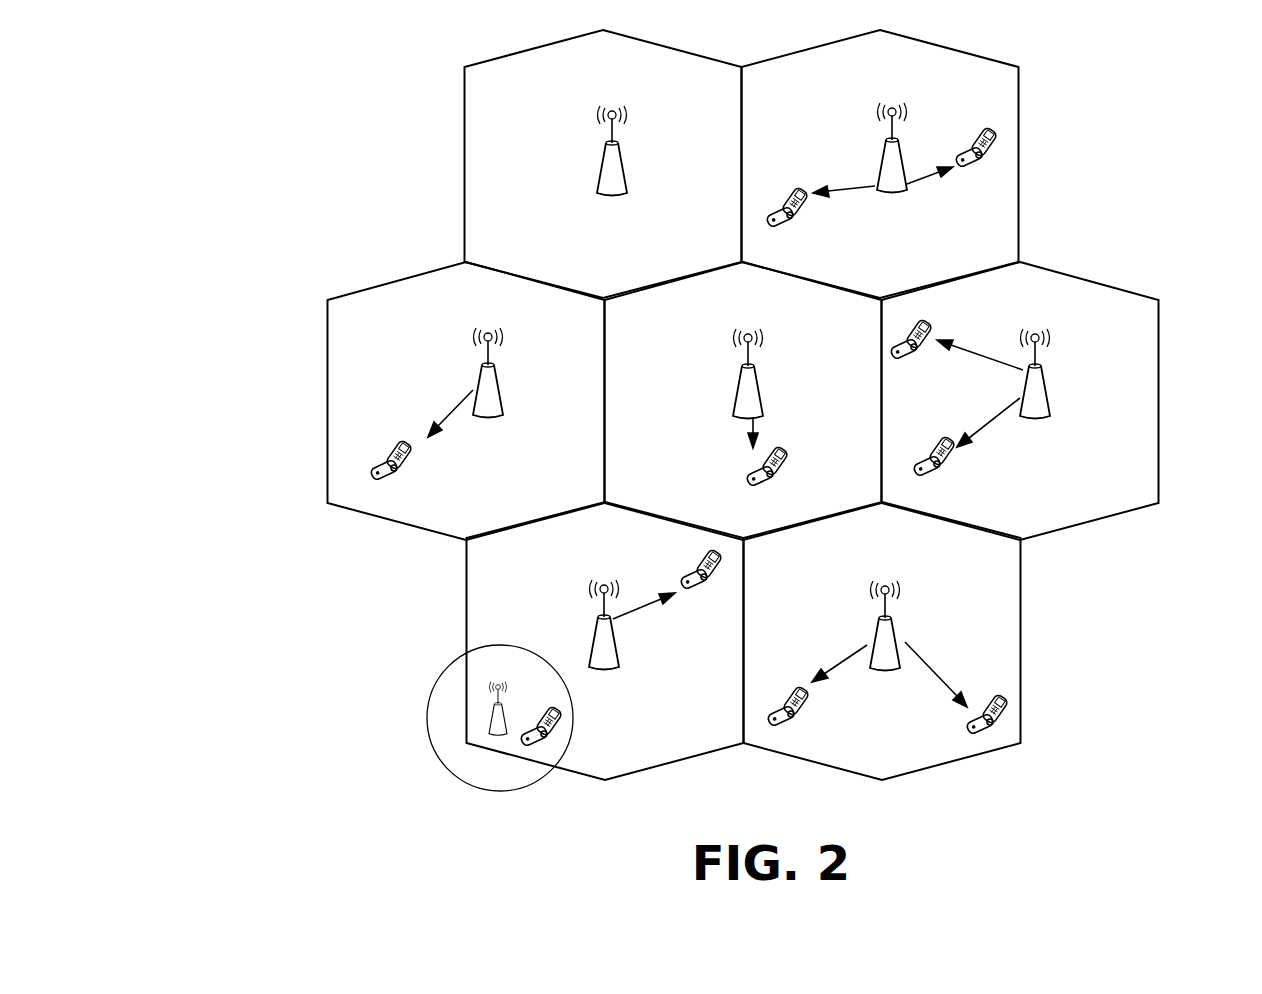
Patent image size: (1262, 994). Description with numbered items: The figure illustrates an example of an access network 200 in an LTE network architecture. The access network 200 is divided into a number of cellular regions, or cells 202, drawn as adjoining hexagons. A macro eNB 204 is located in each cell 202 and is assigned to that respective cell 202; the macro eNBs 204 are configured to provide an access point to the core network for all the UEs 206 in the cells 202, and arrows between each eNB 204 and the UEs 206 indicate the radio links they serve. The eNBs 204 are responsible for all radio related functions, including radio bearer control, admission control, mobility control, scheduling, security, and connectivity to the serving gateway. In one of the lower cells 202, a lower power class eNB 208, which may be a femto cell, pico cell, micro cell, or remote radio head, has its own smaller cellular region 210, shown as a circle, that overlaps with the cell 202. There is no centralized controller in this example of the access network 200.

The access network 200 is at (214, 103).
The cell 202 is at (465, 118).
The macro eNB 204 is at (606, 98).
The UE 206 is at (802, 214).
The lower power class eNB 208 is at (495, 676).
The cellular region 210 is at (440, 722).